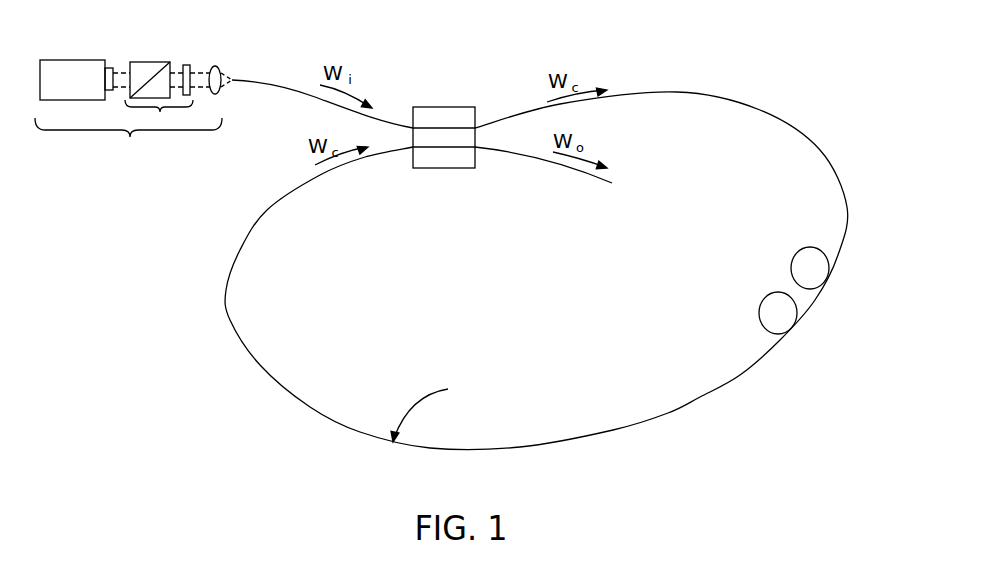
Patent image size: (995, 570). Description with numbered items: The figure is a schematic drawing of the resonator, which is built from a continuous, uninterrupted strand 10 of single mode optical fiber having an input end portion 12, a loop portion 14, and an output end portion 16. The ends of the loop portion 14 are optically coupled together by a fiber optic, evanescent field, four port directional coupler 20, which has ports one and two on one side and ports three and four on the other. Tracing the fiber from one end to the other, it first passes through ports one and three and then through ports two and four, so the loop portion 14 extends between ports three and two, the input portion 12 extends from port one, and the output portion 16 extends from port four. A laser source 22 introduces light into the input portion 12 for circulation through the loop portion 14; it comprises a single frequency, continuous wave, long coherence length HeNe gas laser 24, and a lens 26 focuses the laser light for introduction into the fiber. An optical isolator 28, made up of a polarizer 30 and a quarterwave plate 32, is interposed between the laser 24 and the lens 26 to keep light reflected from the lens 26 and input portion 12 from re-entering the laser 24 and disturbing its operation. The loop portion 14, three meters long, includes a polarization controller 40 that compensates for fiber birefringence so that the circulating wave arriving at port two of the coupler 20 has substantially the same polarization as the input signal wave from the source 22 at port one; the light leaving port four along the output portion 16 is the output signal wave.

The strand of single mode optical fiber 10 is at (692, 88).
The input end portion 12 is at (314, 98).
The loop portion 14 is at (668, 415).
The output end portion 16 is at (578, 171).
The directional coupler 20 is at (430, 107).
The laser source 22 is at (144, 89).
The laser 24 is at (65, 60).
The lens 26 is at (220, 70).
The optical isolator 28 is at (166, 74).
The polarizer 30 is at (143, 62).
The quarterwave plate 32 is at (187, 65).
The polarization controller 40 is at (812, 248).